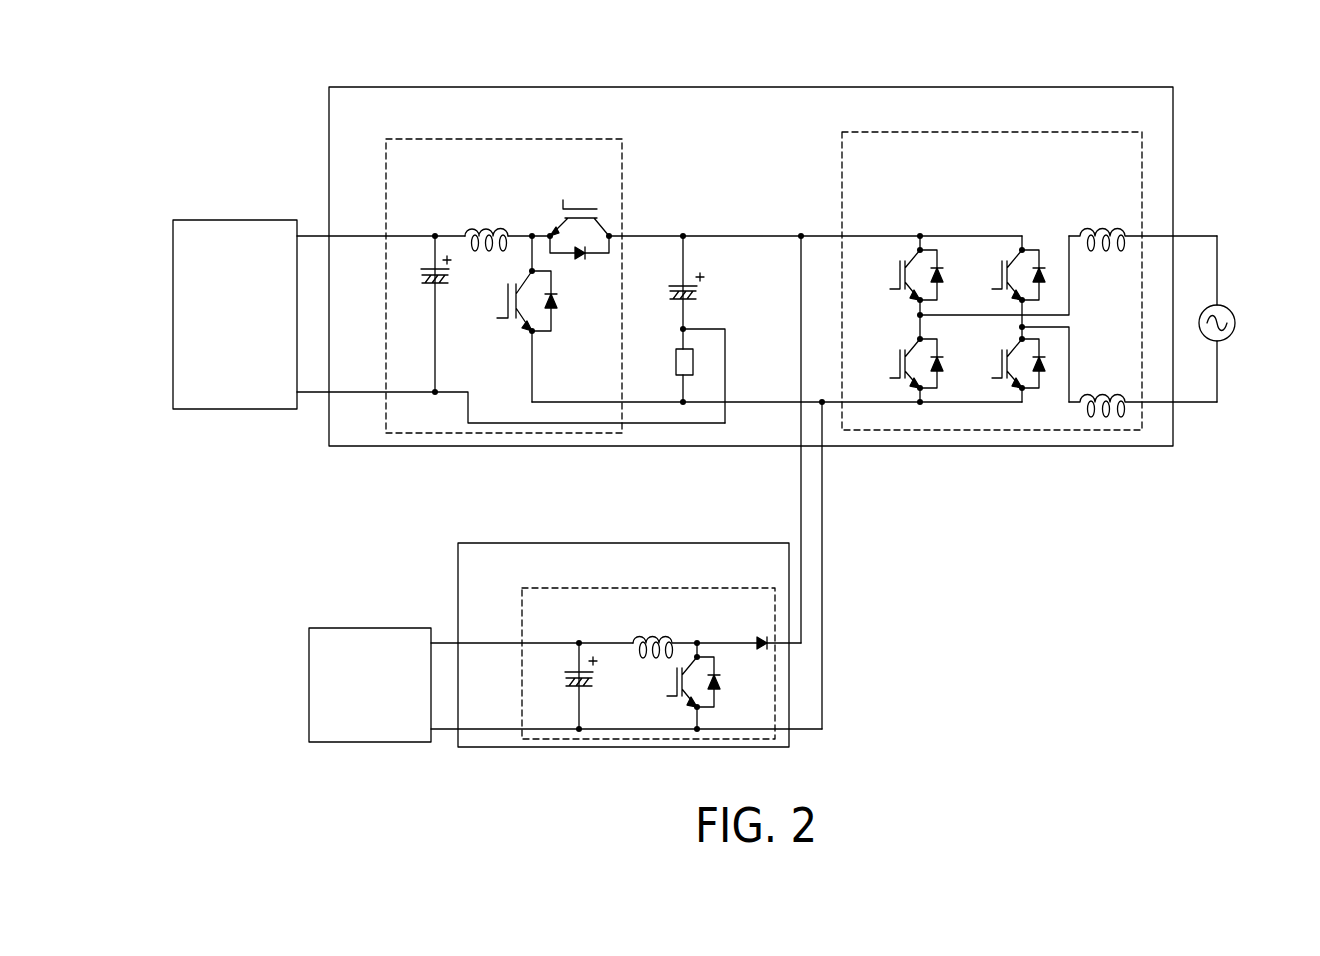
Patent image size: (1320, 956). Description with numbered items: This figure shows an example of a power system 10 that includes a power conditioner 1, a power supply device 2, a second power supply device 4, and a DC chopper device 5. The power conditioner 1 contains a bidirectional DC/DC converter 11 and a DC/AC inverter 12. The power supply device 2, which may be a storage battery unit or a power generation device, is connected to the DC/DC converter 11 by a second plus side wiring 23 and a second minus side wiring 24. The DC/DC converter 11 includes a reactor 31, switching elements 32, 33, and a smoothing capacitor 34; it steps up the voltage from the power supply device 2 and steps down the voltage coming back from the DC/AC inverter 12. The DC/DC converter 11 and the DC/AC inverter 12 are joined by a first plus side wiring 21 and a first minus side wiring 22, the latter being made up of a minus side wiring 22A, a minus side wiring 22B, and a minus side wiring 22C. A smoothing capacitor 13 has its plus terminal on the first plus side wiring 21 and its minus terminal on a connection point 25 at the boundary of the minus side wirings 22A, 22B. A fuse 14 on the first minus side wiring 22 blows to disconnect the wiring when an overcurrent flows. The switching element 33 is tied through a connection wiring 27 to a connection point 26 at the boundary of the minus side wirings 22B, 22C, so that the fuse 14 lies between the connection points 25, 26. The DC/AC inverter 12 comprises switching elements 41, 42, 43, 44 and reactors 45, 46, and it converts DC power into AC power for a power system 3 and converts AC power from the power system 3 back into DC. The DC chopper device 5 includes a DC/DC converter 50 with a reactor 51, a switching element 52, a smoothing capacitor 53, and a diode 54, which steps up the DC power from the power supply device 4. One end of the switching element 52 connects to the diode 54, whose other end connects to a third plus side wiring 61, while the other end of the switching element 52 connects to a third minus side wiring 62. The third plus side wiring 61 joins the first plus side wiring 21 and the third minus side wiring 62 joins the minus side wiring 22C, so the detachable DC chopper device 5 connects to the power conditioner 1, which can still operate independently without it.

The power system 10 is at (226, 95).
The power conditioner 1 is at (329, 107).
The power supply device 2 is at (236, 220).
The power system 3 is at (1231, 307).
The power supply device 4 is at (375, 628).
The DC chopper device 5 is at (488, 543).
The DC/DC converter 11 is at (622, 160).
The DC/AC inverter 12 is at (842, 152).
The smoothing capacitor 13 is at (678, 286).
The fuse 14 is at (678, 350).
The first plus side wiring 21 is at (735, 236).
The first minus side wiring 22 is at (788, 490).
The minus side wiring 22A is at (670, 424).
The minus side wiring 22B is at (686, 387).
The minus side wiring 22C is at (752, 403).
The second plus side wiring 23 is at (357, 236).
The second minus side wiring 24 is at (357, 392).
The connection point 25 is at (690, 329).
The connection point 26 is at (683, 402).
The connection wiring 27 is at (643, 403).
The reactor 31 is at (492, 229).
The switching element 32 is at (568, 203).
The switching element 33 is at (500, 317).
The smoothing capacitor 34 is at (423, 285).
The switching element 41 is at (890, 289).
The switching element 42 is at (890, 378).
The switching element 43 is at (992, 289).
The switching element 44 is at (992, 378).
The reactor 45 is at (1100, 228).
The reactor 46 is at (1100, 394).
The DC/DC converter 50 is at (522, 612).
The reactor 51 is at (639, 650).
The switching element 52 is at (668, 697).
The smoothing capacitor 53 is at (572, 688).
The diode 54 is at (762, 652).
The third plus side wiring 61 is at (801, 520).
The third minus side wiring 62 is at (822, 562).